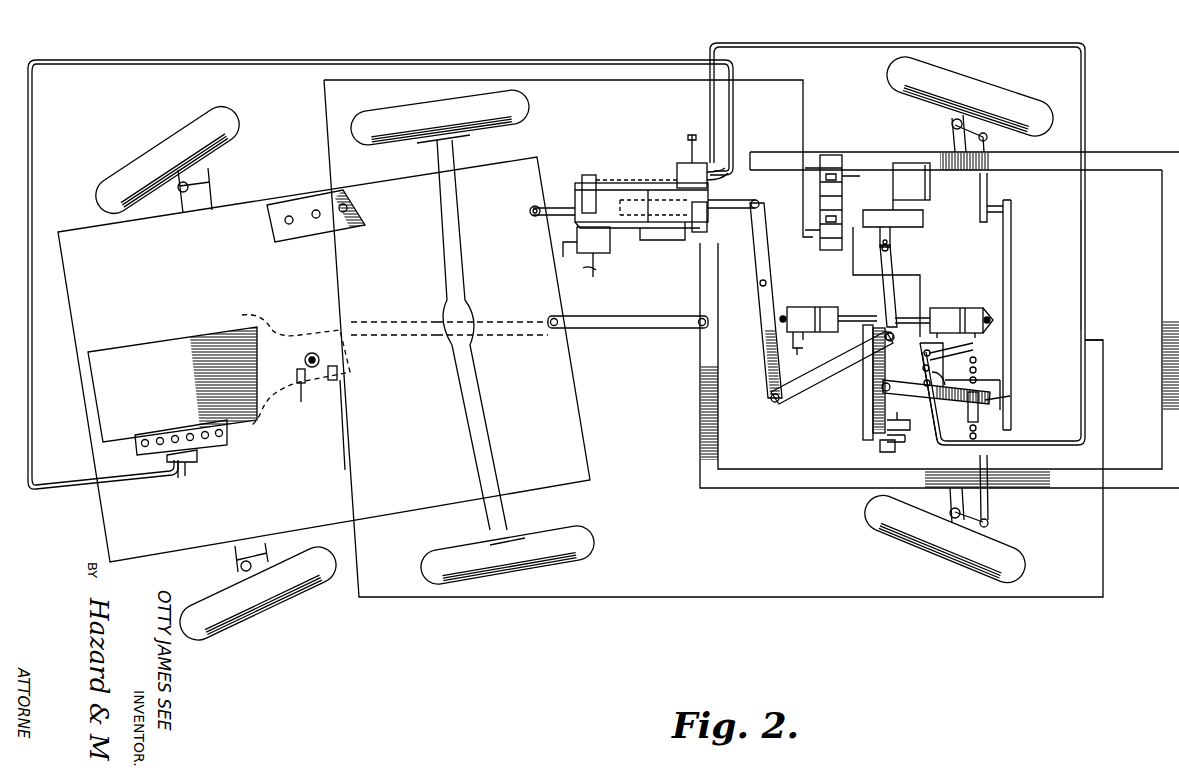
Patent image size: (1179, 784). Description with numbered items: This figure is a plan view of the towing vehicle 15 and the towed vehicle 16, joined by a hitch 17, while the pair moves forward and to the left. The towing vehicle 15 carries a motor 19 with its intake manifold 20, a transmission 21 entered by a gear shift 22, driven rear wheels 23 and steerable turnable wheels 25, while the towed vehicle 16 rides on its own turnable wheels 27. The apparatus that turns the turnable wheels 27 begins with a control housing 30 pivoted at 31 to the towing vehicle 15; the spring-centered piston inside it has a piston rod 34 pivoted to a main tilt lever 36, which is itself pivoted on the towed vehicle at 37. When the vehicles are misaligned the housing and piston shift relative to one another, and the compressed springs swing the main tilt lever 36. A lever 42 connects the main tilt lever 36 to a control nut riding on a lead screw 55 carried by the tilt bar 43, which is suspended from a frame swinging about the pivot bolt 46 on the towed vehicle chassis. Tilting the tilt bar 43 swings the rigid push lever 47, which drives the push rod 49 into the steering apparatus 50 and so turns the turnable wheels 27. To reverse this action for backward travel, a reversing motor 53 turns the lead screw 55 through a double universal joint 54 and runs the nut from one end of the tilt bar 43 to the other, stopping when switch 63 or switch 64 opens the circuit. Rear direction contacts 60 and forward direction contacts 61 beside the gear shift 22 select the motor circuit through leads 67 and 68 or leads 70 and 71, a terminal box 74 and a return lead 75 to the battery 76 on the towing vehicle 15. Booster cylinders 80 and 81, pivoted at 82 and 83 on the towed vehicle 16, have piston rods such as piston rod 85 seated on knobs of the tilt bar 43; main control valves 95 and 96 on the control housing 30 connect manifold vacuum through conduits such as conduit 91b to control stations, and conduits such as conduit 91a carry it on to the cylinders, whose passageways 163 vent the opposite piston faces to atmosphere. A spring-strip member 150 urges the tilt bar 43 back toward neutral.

The towing vehicle 15 is at (585, 438).
The towed vehicle 16 is at (790, 490).
The hitch 17 is at (650, 330).
The motor 19 is at (108, 380).
The manifold 20 is at (214, 448).
The transmission 21 is at (296, 330).
The gear shift 22 is at (318, 355).
The rear wheels 23 is at (520, 104).
The turnable wheels 25 is at (235, 112).
The turnable wheels 27 is at (1008, 96).
The control housing 30 is at (620, 190).
The pivot 31 is at (538, 205).
The piston rod 34 is at (738, 210).
The main tilt lever 36 is at (768, 245).
The pivot 37 is at (760, 284).
The lever 42 is at (800, 395).
The tilt bar 43 is at (863, 430).
The pivot bolt 46 is at (882, 388).
The push lever 47 is at (1000, 410).
The push rod 49 is at (1012, 265).
The steering apparatus 50 is at (1000, 187).
The motor 53 is at (925, 195).
The double universal joint 54 is at (895, 264).
The lead screw 55 is at (873, 405).
The contacts 60 is at (296, 380).
The contacts 61 is at (338, 375).
The switch 63 is at (895, 330).
The switch 64 is at (885, 452).
The lead 67 is at (905, 440).
The lead 68 is at (910, 425).
The lead 70 is at (1068, 330).
The lead 71 is at (922, 300).
The terminal box 74 is at (832, 158).
The lead 75 is at (765, 78).
The battery 76 is at (310, 198).
The cylinder 80 is at (812, 310).
The cylinder 81 is at (958, 312).
The pivot 82 is at (784, 317).
The pivot 83 is at (990, 320).
The piston rod 85 is at (860, 316).
The conduit 91a is at (949, 391).
The conduit 91b is at (1086, 262).
The main control valve 95 is at (684, 165).
The main control valve 96 is at (605, 248).
The spring-strip member 150 is at (955, 426).
The passageways 163 is at (820, 346).